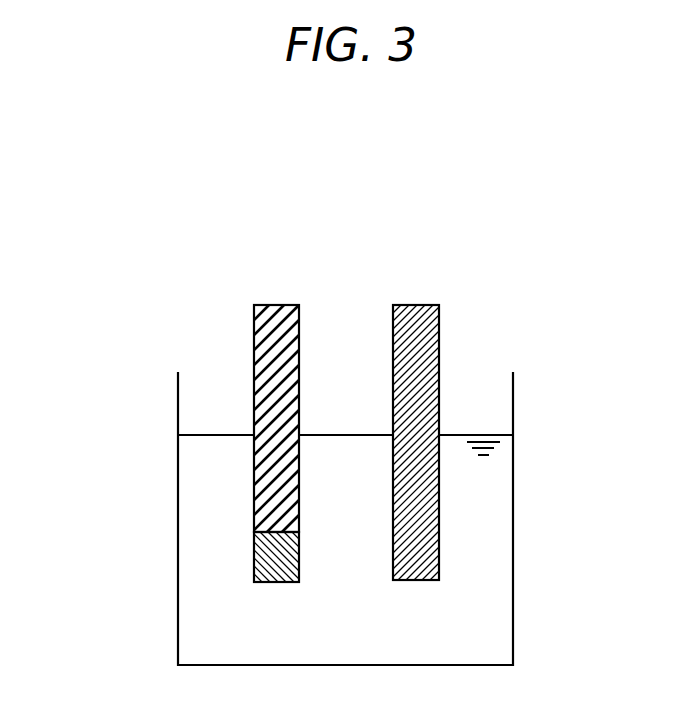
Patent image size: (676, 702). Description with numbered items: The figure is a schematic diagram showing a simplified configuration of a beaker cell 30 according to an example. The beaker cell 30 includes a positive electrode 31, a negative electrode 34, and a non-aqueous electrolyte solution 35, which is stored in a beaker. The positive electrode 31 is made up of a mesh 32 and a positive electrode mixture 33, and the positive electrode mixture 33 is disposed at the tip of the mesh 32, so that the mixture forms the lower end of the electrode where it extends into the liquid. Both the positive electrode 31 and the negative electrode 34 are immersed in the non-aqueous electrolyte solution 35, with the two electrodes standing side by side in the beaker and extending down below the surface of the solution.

The beaker cell 30 is at (390, 200).
The positive electrode 31 is at (95, 463).
The mesh 32 is at (265, 484).
The positive electrode mixture 33 is at (268, 566).
The negative electrode 34 is at (438, 323).
The non-aqueous electrolyte solution 35 is at (482, 562).